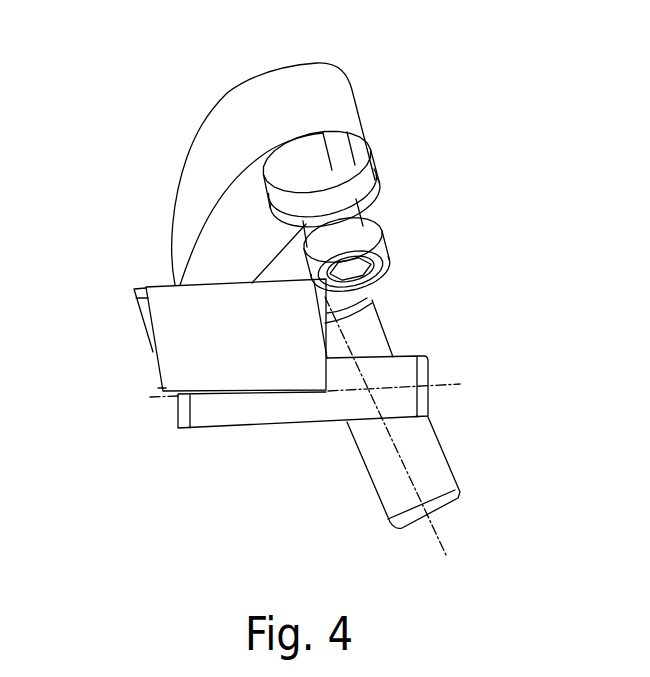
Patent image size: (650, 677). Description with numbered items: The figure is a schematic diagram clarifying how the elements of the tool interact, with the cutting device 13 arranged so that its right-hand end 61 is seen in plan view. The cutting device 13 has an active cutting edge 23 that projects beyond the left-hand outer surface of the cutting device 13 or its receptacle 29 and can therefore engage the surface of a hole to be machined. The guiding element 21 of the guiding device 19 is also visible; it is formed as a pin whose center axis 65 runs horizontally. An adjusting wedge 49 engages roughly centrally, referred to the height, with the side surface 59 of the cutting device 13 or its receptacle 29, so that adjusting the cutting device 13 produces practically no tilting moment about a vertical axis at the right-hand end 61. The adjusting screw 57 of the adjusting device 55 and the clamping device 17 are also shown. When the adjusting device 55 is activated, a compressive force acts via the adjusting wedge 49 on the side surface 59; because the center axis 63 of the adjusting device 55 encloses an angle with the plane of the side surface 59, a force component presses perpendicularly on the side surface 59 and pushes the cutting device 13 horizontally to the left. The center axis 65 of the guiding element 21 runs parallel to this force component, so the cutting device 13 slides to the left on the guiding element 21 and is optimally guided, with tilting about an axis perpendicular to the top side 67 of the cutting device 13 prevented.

The cutting device 13 is at (141, 377).
The clamping device 17 is at (350, 73).
The guiding device 19 is at (257, 427).
The guiding element 21 is at (217, 418).
The active cutting edge 23 is at (134, 288).
The receptacle 29 is at (162, 388).
The adjusting wedge 49 is at (369, 323).
The adjusting device 55 is at (440, 436).
The adjusting screw 57 is at (430, 470).
The side surface 59 is at (370, 298).
The right-hand end 61 is at (252, 350).
The center axis 63 is at (446, 540).
The center axis 65 is at (453, 383).
The top side 67 is at (216, 284).